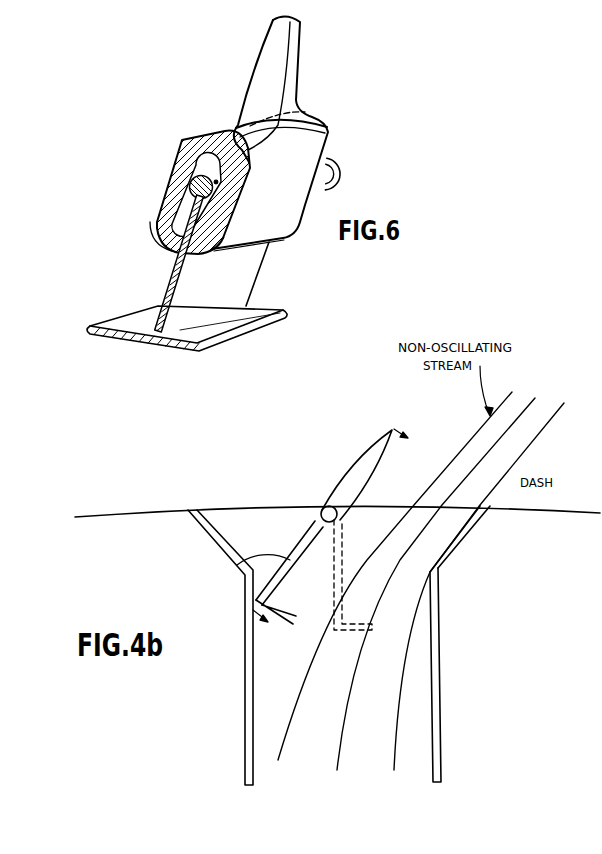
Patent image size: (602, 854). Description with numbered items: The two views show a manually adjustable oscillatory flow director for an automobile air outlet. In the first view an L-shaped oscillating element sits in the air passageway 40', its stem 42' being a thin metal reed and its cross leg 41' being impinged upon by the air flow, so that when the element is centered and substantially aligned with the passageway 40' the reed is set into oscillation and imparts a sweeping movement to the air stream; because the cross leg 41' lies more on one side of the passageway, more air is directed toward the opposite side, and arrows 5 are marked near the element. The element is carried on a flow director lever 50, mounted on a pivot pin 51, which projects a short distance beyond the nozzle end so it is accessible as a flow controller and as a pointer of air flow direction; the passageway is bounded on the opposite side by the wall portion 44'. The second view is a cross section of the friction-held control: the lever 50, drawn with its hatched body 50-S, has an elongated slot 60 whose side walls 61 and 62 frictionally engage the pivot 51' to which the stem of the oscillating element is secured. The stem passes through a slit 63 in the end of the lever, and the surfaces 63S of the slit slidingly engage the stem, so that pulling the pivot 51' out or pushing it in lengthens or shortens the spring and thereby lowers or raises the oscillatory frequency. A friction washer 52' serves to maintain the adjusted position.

In FIG. 6, the flow director lever 50 is at (288, 70).
In FIG. 4b, the flow director lever 50 is at (337, 490).
In FIG. 6, the blade support block 50-S is at (194, 133).
In FIG. 4b, the pivot pin 51 is at (296, 555).
In FIG. 6, the pivot 51' is at (191, 179).
In FIG. 6, the friction washer 52' is at (348, 174).
In FIG. 6, the elongated slot 60 is at (187, 207).
In FIG. 6, the side wall 61 is at (160, 223).
In FIG. 6, the side wall 62 is at (216, 178).
In FIG. 6, the slit 63 is at (172, 251).
In FIG. 6, the slit surfaces 63S is at (227, 223).
In FIG. 4b, the stem 42' is at (220, 647).
In FIG. 4b, the inclined wall portion 44' is at (460, 541).
In FIG. 4b, the air passageway 40' is at (457, 675).
In FIG. 4b, the cross leg 41' is at (278, 632).
In FIG. 4b, the direction of oscillation arrows 5 is at (339, 535).